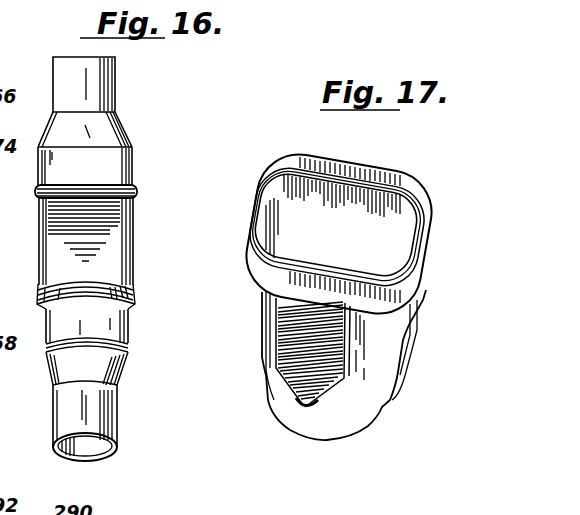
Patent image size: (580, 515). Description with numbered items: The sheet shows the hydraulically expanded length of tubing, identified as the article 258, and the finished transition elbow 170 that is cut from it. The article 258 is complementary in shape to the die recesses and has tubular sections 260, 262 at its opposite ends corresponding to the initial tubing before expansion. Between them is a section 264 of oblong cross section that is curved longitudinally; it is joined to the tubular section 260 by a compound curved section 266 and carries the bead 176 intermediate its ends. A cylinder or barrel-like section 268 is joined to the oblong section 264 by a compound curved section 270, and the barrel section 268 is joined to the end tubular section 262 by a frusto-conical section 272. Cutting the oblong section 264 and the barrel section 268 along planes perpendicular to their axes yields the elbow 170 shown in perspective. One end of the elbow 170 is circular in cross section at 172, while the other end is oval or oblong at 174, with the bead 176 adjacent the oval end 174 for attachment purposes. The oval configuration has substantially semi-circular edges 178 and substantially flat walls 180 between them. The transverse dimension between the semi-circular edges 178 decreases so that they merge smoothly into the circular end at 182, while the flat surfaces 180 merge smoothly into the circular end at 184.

In FIG. 17, the transition elbow 170 is at (358, 293).
In FIG. 17, the circular end 172 is at (340, 441).
In FIG. 17, the oval end 174 is at (387, 183).
In FIG. 16, the bead 176 is at (32, 191).
In FIG. 17, the bead 176 is at (423, 235).
In FIG. 17, the semi-circular edges 178 is at (266, 176).
In FIG. 17, the flat walls 180 is at (358, 178).
In FIG. 17, the merge of semi-circular edges into circular end 182 is at (263, 360).
In FIG. 17, the merge of flat surfaces into circular end 184 is at (303, 394).
In FIG. 16, the expanded tubing article 258 is at (101, 259).
In FIG. 16, the tubular section 260 is at (97, 73).
In FIG. 16, the tubular section 262 is at (100, 415).
In FIG. 16, the oblong section 264 is at (113, 163).
In FIG. 16, the compound curved section 266 is at (103, 127).
In FIG. 16, the barrel section 268 is at (113, 333).
In FIG. 16, the compound curved section 270 is at (128, 285).
In FIG. 16, the frusto-conical section 272 is at (113, 375).